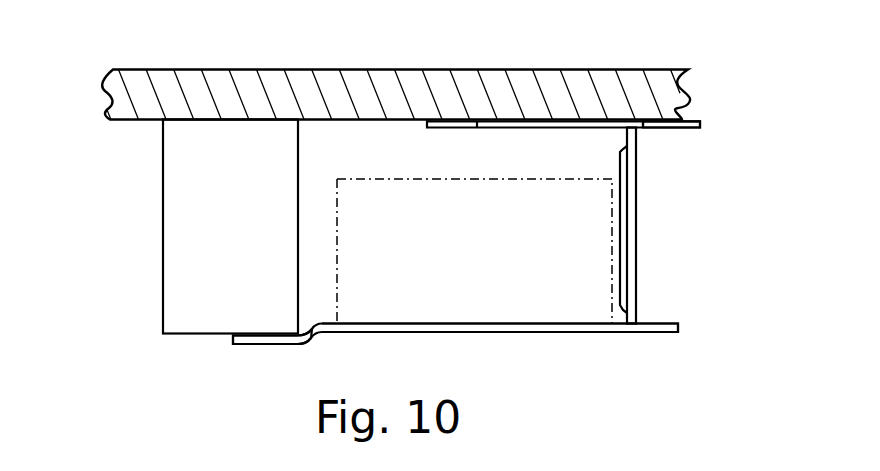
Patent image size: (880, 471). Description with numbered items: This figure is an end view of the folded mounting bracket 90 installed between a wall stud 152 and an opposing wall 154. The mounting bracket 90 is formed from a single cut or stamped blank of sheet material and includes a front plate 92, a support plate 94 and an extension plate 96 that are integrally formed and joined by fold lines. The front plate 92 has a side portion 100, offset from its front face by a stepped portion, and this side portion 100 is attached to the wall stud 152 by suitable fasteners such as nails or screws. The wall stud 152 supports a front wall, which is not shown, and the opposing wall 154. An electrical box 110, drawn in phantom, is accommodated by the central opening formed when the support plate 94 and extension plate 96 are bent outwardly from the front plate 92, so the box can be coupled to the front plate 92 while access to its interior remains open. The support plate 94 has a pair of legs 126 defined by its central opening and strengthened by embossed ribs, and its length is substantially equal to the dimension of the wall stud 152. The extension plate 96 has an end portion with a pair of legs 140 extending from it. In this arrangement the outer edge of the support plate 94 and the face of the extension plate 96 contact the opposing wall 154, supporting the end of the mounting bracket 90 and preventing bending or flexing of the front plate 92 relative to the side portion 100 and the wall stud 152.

The opposing wall 154 is at (218, 70).
The wall stud 152 is at (163, 186).
The electrical box 110 is at (362, 179).
The legs 140 is at (452, 128).
The extension plate 96 is at (668, 132).
The support plate 94 is at (637, 205).
The legs 126 is at (636, 288).
The front plate 92 is at (597, 333).
The side portion 100 is at (255, 344).
The mounting bracket 90 is at (478, 345).